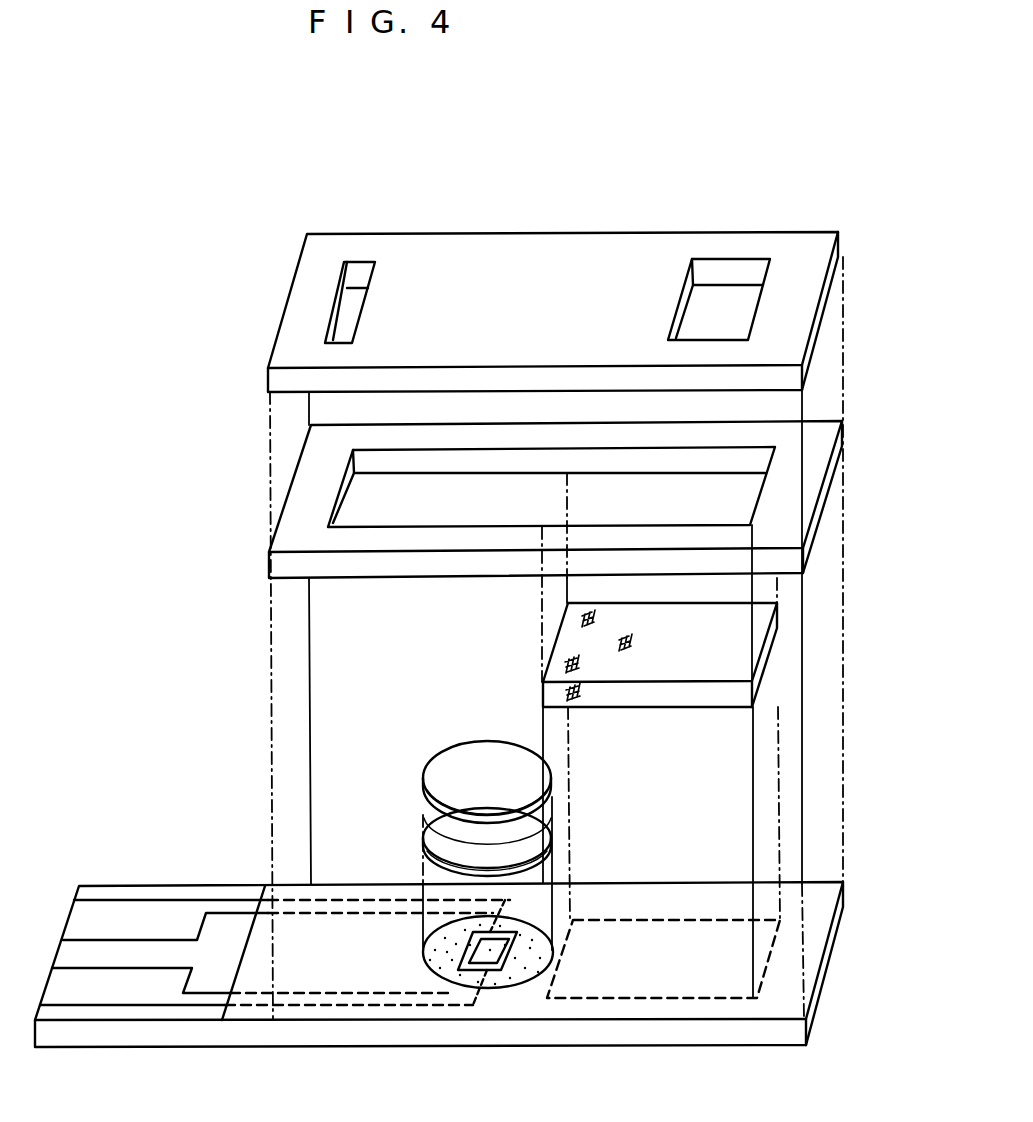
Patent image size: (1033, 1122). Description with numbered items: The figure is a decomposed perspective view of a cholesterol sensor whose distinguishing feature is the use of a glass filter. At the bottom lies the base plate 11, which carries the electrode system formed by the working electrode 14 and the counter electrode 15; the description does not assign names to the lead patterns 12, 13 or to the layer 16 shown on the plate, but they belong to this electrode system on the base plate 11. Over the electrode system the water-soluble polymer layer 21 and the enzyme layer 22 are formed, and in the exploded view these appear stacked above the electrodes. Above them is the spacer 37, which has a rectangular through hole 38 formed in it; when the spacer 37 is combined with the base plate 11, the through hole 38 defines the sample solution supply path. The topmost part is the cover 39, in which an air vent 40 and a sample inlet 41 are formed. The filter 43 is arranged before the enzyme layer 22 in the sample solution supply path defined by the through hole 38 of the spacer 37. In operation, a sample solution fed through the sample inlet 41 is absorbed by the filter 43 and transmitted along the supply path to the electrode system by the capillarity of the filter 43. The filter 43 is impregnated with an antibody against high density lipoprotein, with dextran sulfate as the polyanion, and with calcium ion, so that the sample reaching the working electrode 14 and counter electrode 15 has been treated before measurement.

The base plate 11 is at (667, 1030).
The electrode 12 is at (120, 993).
The electrode 13 is at (133, 920).
The working electrode 14 is at (503, 957).
The counter electrode 15 is at (447, 965).
The insulating layer 16 is at (340, 967).
The water-soluble polymer layer 21 is at (440, 833).
The enzyme layer 22 is at (442, 772).
The spacer 37 is at (310, 487).
The through hole 38 is at (447, 513).
The cover 39 is at (307, 295).
The air vent 40 is at (355, 303).
The sample inlet 41 is at (723, 307).
The filter 43 is at (767, 655).